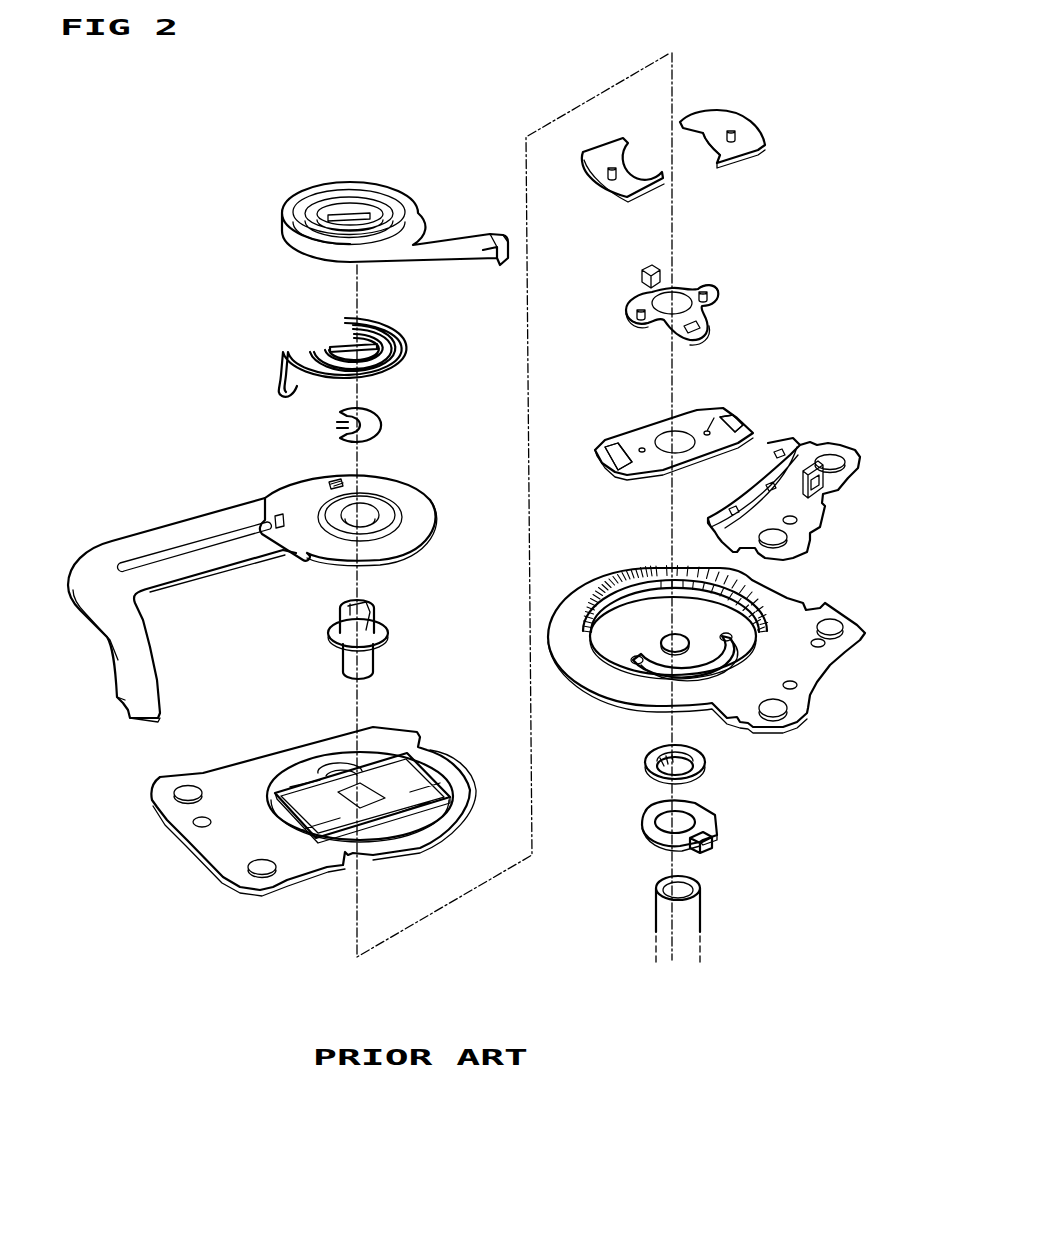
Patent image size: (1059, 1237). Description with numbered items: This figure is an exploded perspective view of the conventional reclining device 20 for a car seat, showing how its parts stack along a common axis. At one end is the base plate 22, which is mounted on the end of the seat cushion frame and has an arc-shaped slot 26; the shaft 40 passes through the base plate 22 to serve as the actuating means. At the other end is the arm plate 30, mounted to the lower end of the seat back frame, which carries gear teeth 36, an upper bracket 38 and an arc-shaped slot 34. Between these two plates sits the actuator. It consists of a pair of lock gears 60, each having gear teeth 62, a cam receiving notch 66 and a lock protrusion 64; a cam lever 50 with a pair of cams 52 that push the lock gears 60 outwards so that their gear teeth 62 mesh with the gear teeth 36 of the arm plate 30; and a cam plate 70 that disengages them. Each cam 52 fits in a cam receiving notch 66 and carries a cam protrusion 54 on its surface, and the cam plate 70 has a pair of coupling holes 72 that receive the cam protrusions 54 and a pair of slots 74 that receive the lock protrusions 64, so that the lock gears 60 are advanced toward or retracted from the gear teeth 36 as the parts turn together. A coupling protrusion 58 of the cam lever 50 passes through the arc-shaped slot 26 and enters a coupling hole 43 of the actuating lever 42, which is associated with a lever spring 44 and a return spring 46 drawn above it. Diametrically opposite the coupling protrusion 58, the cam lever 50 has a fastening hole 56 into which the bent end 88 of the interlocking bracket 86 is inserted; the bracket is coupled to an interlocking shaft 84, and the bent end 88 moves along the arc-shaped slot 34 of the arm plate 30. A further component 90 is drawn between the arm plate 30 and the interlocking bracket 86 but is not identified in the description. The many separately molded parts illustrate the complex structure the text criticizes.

The reclining device 20 is at (203, 282).
The base plate 22 is at (450, 740).
The arc-shaped slot 26 is at (327, 773).
The arm plate 30 is at (607, 678).
The arc-shaped slot 34 is at (632, 631).
The gear teeth 36 is at (610, 597).
The upper bracket 38 is at (800, 533).
The shaft 40 is at (385, 632).
The actuating lever 42 is at (190, 530).
The coupling hole 43 is at (330, 481).
The lever spring 44 is at (410, 346).
The return spring 46 is at (350, 182).
The cam lever 50 is at (737, 282).
The cam 52 is at (630, 305).
The cam protrusion 54 is at (622, 318).
The fastening hole 56 is at (712, 325).
The coupling protrusion 58 is at (650, 268).
The lock gear 60 is at (718, 115).
The gear teeth 62 is at (592, 176).
The lock protrusion 64 is at (612, 168).
The cam receiving notch 66 is at (714, 150).
The cam plate 70 is at (705, 420).
The coupling hole 72 is at (668, 410).
The slot 74 is at (740, 426).
The shaft 84 is at (690, 920).
The interlocking bracket 86 is at (705, 815).
The bent end 88 is at (705, 840).
The washer 90 is at (705, 765).